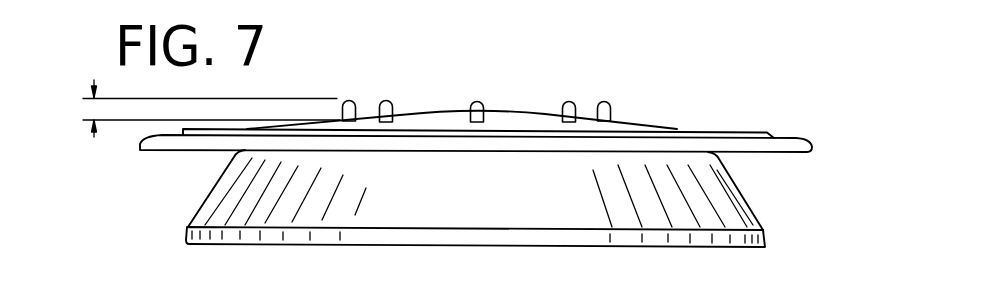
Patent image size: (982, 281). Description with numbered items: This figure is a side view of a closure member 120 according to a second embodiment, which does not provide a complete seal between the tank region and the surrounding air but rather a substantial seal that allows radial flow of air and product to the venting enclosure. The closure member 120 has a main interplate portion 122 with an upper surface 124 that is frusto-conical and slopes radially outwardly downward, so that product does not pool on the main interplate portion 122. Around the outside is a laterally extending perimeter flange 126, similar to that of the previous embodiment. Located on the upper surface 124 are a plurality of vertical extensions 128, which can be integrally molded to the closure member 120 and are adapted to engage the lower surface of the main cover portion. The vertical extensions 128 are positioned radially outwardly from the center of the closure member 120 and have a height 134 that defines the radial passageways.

The closure member 120 is at (676, 129).
The main interplate portion 122 is at (535, 123).
The upper surface 124 is at (515, 112).
The laterally extending perimeter flange 126 is at (720, 210).
The vertical extensions 128 is at (473, 107).
The height of the vertical extensions 134 is at (207, 128).